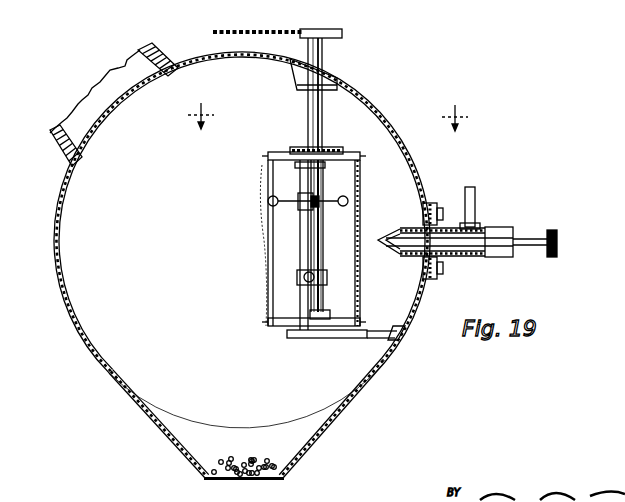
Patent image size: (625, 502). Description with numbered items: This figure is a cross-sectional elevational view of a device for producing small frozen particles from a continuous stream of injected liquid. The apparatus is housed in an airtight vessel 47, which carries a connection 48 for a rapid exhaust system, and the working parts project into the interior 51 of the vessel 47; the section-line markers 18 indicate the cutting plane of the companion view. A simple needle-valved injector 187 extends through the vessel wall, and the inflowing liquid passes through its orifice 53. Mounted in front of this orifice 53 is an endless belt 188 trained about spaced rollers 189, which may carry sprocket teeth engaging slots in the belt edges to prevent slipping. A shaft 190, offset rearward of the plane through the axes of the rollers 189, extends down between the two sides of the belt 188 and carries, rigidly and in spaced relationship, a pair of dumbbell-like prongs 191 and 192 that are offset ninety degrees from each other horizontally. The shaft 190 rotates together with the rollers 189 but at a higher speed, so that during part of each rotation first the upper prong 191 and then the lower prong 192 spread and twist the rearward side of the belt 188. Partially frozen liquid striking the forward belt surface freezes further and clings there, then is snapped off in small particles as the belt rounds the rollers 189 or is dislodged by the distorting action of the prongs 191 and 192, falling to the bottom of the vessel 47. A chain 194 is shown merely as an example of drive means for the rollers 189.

The section line indicator 18 is at (328, 127).
The airtight vessel 47 is at (386, 123).
The connection for a rapid exhaust system 48 is at (157, 50).
The interior of the vessel 51 is at (108, 350).
The orifice 53 is at (375, 238).
The needle-valved injector 187 is at (472, 259).
The endless belt 188 is at (362, 291).
The rollers 189 is at (357, 176).
The shaft 190 is at (300, 256).
The dumbbell-like prong 191 is at (324, 197).
The dumbbell-like prong 192 is at (296, 282).
The chain 194 is at (277, 21).